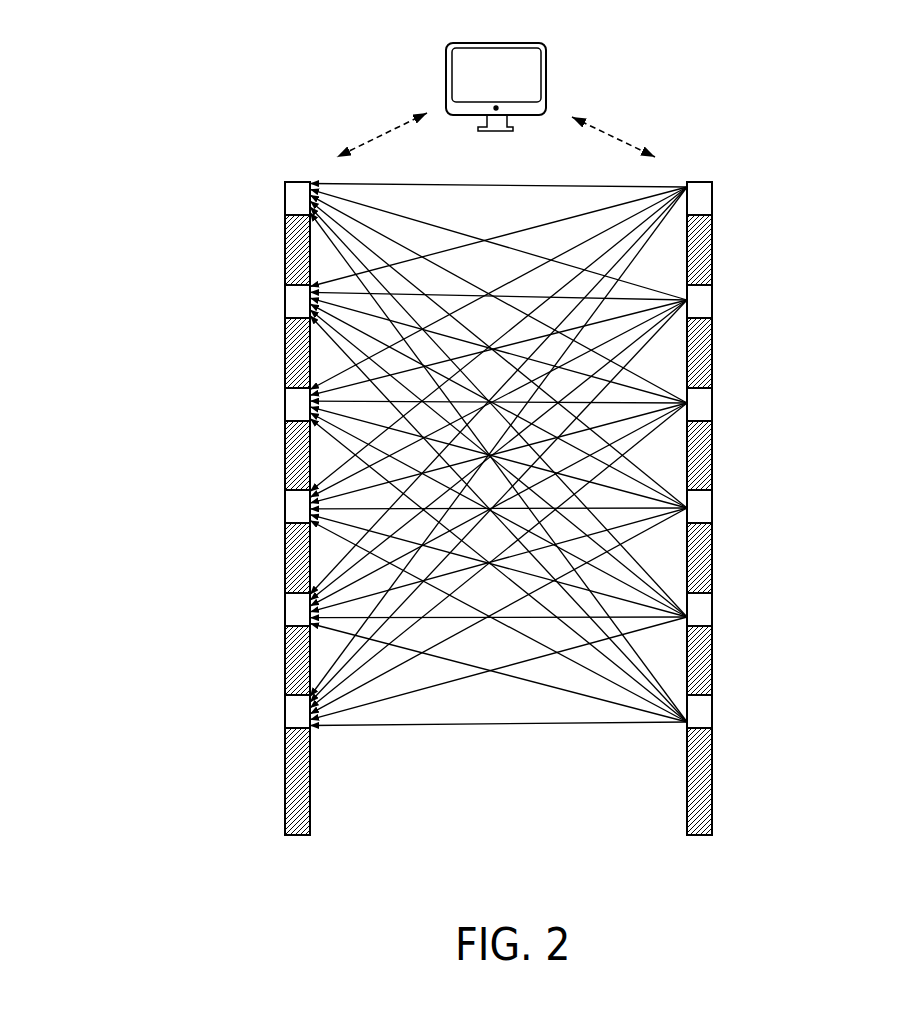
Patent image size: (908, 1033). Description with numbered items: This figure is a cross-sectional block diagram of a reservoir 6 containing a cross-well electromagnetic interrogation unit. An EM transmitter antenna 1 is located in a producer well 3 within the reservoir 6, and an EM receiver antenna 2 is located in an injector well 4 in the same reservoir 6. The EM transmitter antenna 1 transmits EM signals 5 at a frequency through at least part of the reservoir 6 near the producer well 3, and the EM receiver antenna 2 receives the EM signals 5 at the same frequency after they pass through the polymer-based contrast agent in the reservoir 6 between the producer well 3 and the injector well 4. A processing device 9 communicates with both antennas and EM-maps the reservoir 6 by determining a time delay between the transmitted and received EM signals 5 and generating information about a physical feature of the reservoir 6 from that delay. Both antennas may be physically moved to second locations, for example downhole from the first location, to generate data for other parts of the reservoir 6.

The EM transmitter antenna 1 is at (712, 191).
The EM receiver antenna 2 is at (284, 192).
The producer well 3 is at (700, 835).
The injector well 4 is at (295, 835).
The EM signals 5 is at (405, 745).
The reservoir 6 is at (541, 826).
The processing device 9 is at (546, 63).